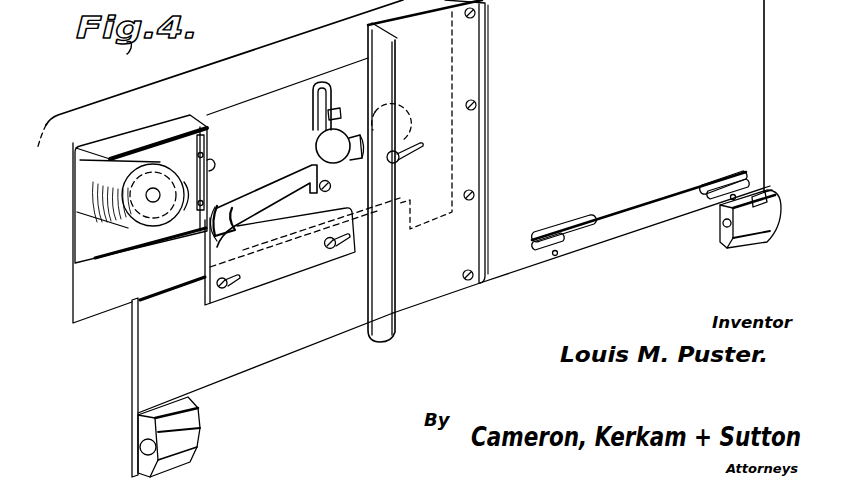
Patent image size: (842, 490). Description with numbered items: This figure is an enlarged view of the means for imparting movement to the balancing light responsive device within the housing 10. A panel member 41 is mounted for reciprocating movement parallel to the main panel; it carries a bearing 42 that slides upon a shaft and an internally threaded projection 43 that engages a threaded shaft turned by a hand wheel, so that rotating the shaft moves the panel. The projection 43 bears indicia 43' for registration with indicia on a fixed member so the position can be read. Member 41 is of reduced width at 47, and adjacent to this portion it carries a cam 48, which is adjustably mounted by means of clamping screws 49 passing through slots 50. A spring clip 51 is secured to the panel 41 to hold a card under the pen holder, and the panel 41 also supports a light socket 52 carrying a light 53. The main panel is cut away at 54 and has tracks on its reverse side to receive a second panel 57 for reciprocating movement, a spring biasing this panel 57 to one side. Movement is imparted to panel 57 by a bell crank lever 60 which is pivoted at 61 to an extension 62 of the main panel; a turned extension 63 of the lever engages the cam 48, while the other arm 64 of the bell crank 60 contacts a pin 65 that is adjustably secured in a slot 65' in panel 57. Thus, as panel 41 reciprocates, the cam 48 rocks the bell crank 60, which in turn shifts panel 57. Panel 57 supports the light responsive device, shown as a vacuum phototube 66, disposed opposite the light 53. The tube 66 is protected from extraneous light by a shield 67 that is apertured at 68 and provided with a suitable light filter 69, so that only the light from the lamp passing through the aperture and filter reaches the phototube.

The housing 10 is at (237, 63).
The panel member 41 is at (142, 368).
The bearing 42 is at (190, 436).
The internally threaded projection 43 is at (750, 229).
The indicia 43' is at (783, 179).
The reduced width portion 47 is at (172, 298).
The cam 48 is at (292, 271).
The clamping screws 49 is at (224, 289).
The slots 50 is at (234, 284).
The spring clip 51 is at (656, 212).
The light socket 52 is at (410, 123).
The light 53 is at (400, 154).
The cut away 54 is at (265, 101).
The panel 57 is at (81, 312).
The bell crank lever 60 is at (261, 193).
The pivot 61 is at (331, 187).
The extension 62 is at (323, 201).
The turned extension 63 is at (237, 224).
The arm 64 is at (317, 118).
The pin 65 is at (346, 84).
The slot 65' is at (314, 93).
The vacuum phototube 66 is at (154, 208).
The shield 67 is at (158, 140).
The aperture 68 is at (206, 143).
The light filter 69 is at (209, 167).